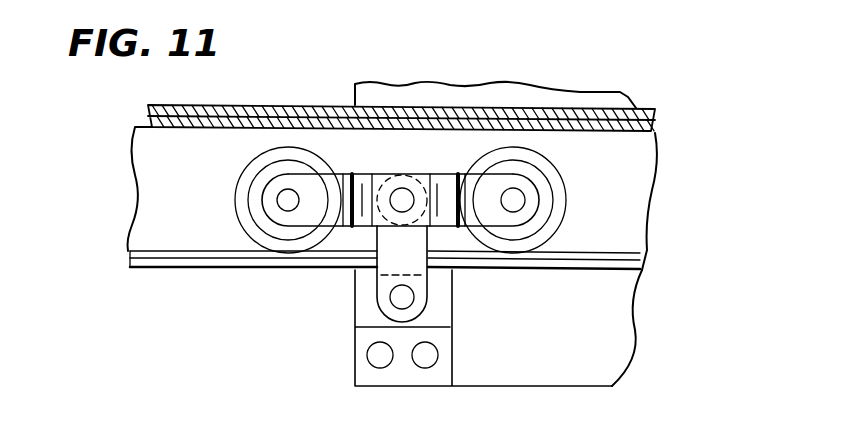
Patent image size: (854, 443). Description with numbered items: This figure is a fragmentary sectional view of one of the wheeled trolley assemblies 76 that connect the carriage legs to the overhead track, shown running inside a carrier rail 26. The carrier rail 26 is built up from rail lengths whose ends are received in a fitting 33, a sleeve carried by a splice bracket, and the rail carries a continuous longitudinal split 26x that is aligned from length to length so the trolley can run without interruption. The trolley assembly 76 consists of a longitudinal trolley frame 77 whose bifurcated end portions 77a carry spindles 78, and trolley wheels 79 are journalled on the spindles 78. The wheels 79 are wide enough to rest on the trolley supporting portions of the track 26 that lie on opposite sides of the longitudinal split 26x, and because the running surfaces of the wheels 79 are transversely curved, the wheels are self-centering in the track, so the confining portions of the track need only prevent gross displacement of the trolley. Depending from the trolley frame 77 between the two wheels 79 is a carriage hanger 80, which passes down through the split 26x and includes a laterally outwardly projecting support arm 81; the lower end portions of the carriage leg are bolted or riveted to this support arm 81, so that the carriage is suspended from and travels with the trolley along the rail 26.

The carrier rail 26 is at (135, 127).
The longitudinal split 26x is at (130, 262).
The fitting 33 is at (256, 105).
The wheeled trolley assembly 76 is at (582, 190).
The longitudinal trolley frame 77 is at (446, 150).
The bifurcated end portion 77a is at (300, 218).
The spindle 78 is at (283, 198).
The trolley wheel 79 is at (243, 176).
The carriage hanger 80 is at (388, 282).
The support arm 81 is at (362, 337).